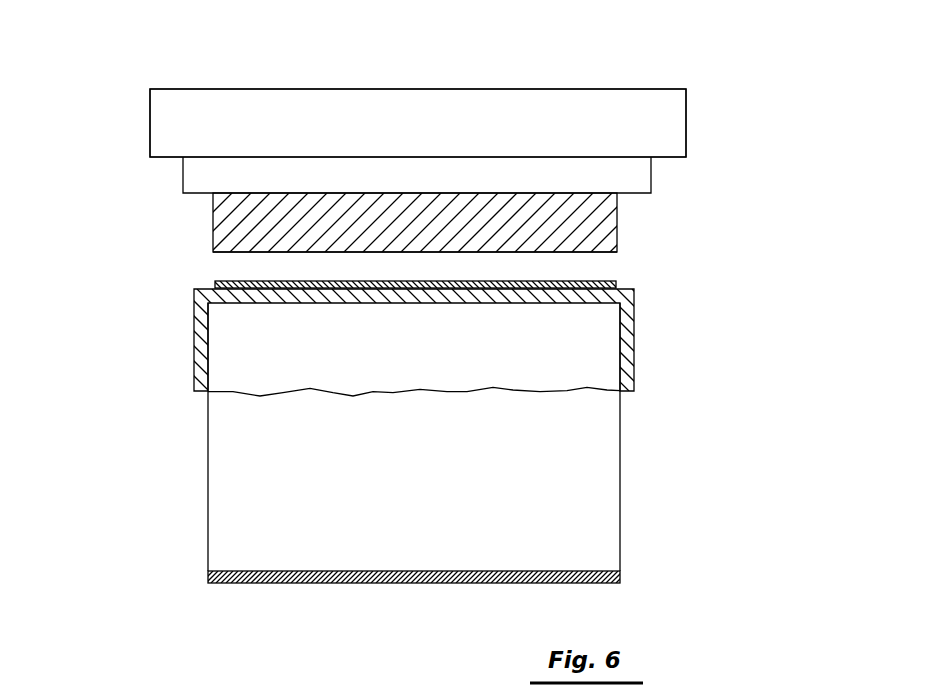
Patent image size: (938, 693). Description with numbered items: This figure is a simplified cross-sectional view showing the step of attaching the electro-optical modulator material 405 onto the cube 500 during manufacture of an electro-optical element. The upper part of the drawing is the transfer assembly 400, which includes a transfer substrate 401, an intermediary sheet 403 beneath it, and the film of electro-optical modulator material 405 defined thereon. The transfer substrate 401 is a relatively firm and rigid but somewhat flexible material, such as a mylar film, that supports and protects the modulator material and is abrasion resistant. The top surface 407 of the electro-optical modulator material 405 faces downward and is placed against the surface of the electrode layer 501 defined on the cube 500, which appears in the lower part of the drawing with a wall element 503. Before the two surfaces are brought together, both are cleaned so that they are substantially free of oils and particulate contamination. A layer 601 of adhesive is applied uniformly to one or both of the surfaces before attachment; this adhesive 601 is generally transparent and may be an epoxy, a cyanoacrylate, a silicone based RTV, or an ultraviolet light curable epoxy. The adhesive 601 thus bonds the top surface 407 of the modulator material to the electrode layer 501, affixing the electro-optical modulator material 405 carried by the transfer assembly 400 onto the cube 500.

The transfer assembly 400 is at (735, 97).
The transfer substrate 401 is at (296, 117).
The intermediary sheet 403 is at (202, 177).
The electro-optical modulator material 405 is at (250, 213).
The top surface 407 is at (243, 253).
The adhesive layer 601 is at (580, 281).
The electrode layer 501 is at (630, 345).
The cube 500 is at (660, 437).
The container bottom wall 503 is at (422, 577).